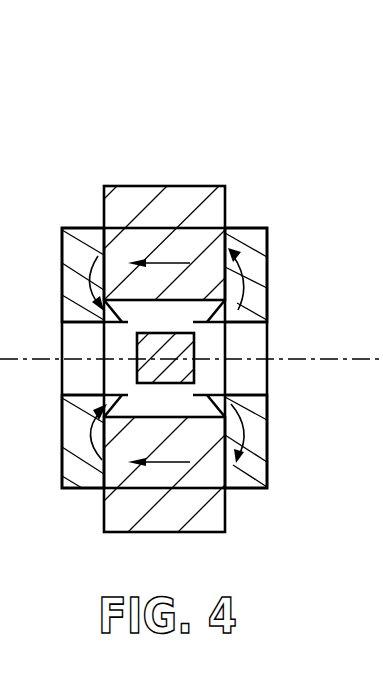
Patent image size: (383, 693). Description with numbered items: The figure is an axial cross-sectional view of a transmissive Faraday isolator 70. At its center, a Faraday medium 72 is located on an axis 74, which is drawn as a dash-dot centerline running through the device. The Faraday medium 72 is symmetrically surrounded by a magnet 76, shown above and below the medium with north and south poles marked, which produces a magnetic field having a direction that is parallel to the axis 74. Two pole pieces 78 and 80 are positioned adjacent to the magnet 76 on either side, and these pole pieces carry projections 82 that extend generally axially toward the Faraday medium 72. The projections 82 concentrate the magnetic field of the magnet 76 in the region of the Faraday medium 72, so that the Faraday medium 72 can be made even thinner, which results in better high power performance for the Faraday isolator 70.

The transmissive Faraday isolator 70 is at (166, 98).
The Faraday medium 72 is at (193, 371).
The axis 74 is at (278, 358).
The magnet 76 is at (203, 186).
The pole piece 78 is at (85, 227).
The pole piece 80 is at (257, 227).
The projections 82 is at (193, 322).